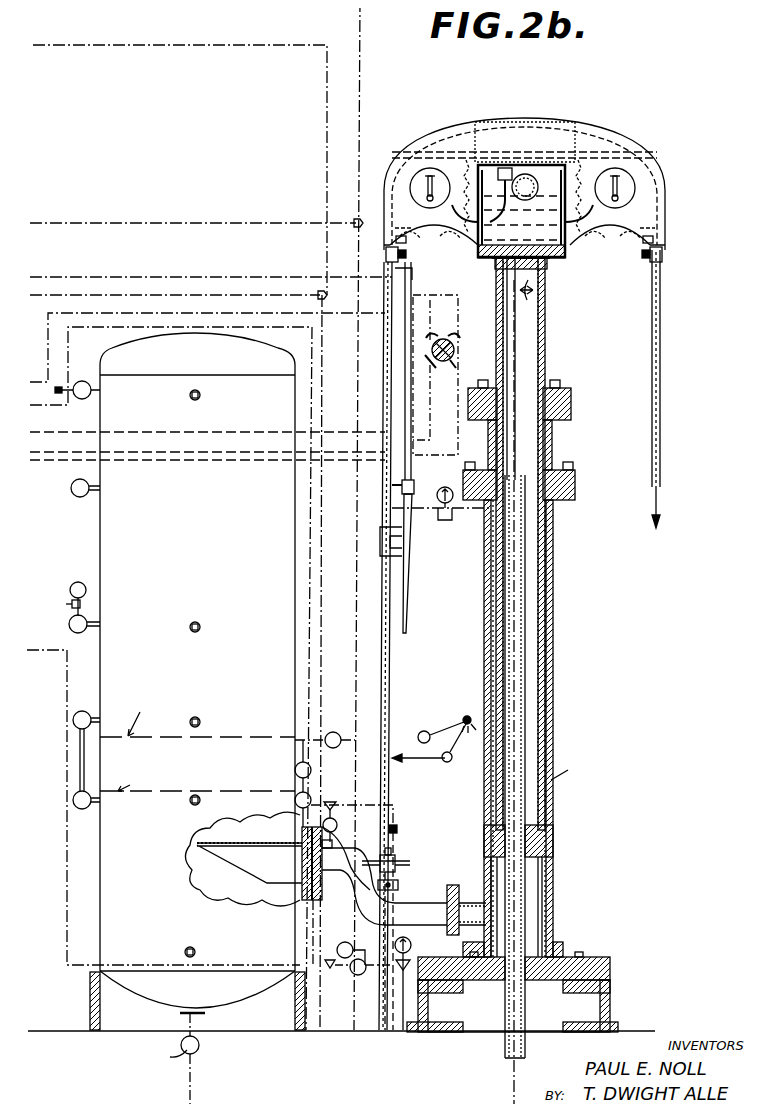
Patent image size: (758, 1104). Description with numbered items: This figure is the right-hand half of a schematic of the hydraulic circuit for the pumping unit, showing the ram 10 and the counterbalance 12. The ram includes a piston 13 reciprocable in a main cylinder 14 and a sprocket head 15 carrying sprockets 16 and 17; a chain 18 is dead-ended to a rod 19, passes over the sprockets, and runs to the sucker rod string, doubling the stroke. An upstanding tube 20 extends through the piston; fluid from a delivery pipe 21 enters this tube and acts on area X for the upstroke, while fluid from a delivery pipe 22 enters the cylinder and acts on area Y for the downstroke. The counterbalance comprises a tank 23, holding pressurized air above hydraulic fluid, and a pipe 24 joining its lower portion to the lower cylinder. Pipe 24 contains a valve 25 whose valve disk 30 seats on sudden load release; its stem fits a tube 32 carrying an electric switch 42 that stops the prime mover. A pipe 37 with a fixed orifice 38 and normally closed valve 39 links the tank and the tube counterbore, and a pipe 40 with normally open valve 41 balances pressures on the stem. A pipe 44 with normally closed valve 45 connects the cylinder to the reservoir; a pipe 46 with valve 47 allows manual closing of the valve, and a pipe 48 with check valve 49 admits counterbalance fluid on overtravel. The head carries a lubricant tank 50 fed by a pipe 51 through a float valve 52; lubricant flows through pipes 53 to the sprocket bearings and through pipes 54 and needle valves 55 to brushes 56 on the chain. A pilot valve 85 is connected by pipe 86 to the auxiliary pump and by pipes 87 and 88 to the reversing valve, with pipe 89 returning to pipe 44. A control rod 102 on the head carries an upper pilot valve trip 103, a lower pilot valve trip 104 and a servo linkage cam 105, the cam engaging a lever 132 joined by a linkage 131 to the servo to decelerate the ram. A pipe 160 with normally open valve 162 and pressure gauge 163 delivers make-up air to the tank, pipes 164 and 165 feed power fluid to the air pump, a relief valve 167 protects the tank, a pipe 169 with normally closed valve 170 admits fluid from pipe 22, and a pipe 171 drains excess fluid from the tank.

The ram 10 is at (546, 352).
The counterbalance 12 is at (88, 978).
The piston 13 is at (553, 836).
The main cylinder 14 is at (553, 628).
The sprocket head 15 is at (522, 120).
The sprocket 16 is at (425, 162).
The sprocket 17 is at (628, 165).
The chain 18 is at (537, 152).
The rod 19 is at (384, 379).
The upstanding tube 20 is at (530, 694).
The delivery pipe 21 is at (270, 45).
The delivery pipe 22 is at (270, 0).
The tank 23 is at (210, 547).
The pipe 24 is at (428, 905).
The valve 25 is at (303, 868).
The valve disk 30 is at (302, 848).
The tube 32 is at (378, 862).
The pipe 37 is at (336, 806).
The fixed orifice 38 is at (398, 830).
The valve 39 is at (311, 797).
The pipe 40 is at (332, 843).
The valve 41 is at (338, 825).
The electric switch 42 is at (398, 886).
The pipe 44 is at (67, 866).
The valve 45 is at (352, 976).
The pipe 46 is at (368, 946).
The valve 47 is at (337, 950).
The pipe 48 is at (400, 966).
The check valve 49 is at (412, 946).
The lubricant tank 50 is at (540, 185).
The pipe 51 is at (496, 264).
The float valve 52 is at (490, 165).
The pipes 53 is at (470, 230).
The pipes 54 is at (655, 236).
The needle valves 55 is at (645, 215).
The brushes 56 is at (383, 265).
The pilot valve 85 is at (456, 347).
The pipe 86 is at (57, 432).
The pipe 87 is at (160, 277).
The pipe 88 is at (82, 452).
The pipe 89 is at (88, 298).
The control rod 102 is at (408, 304).
The upper pilot valve trip 103 is at (410, 281).
The lower pilot valve trip 104 is at (414, 483).
The servo linkage cam 105 is at (418, 600).
The linkage 131 is at (421, 733).
The lever 132 is at (447, 750).
The pipe 160 is at (72, 604).
The valve 162 is at (69, 624).
The pressure gauge 163 is at (82, 584).
The pipe 164 is at (205, 296).
The pipe 165 is at (226, 223).
The relief valve 167 is at (72, 493).
The pipe 169 is at (355, 626).
The valve 170 is at (335, 731).
The pipe 171 is at (68, 342).